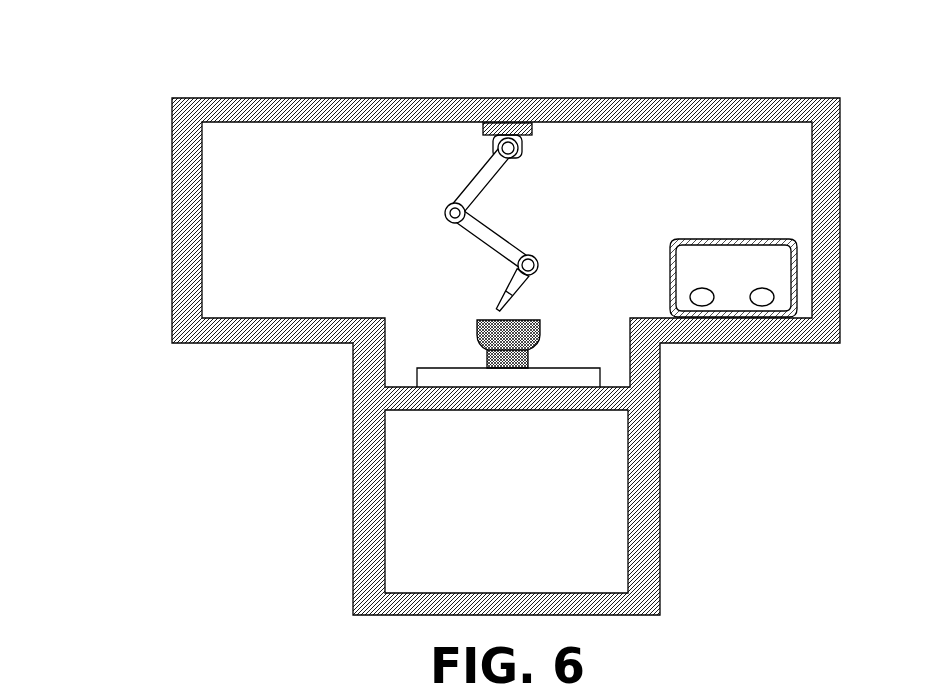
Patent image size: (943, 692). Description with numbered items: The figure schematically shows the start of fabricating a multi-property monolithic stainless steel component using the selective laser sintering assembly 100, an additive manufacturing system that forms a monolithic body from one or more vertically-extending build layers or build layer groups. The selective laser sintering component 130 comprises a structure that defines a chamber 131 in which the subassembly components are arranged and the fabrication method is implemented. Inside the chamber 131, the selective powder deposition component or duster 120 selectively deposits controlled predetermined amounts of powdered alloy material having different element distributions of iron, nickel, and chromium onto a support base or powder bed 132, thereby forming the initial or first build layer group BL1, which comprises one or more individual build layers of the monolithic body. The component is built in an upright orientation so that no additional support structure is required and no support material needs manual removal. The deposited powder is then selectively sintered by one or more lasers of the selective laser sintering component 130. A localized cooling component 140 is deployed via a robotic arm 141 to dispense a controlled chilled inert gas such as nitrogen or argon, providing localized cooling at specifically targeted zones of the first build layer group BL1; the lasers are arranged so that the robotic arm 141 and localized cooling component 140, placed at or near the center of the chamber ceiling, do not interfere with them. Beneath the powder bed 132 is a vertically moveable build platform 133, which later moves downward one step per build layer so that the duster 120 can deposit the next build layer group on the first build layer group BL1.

The selective laser sintering (SLS) assembly 100 is at (148, 98).
The selective laser sintering (SLS) component 130 is at (172, 267).
The chamber 131 is at (288, 179).
The support base or powder bed 132 is at (543, 368).
The vertically moveable build platform 133 is at (508, 405).
The selective powder deposition component or duster 120 is at (695, 265).
The robotic arm 141 is at (468, 190).
The localized cooling component 140 is at (507, 288).
The first build layer group BL1 is at (487, 340).